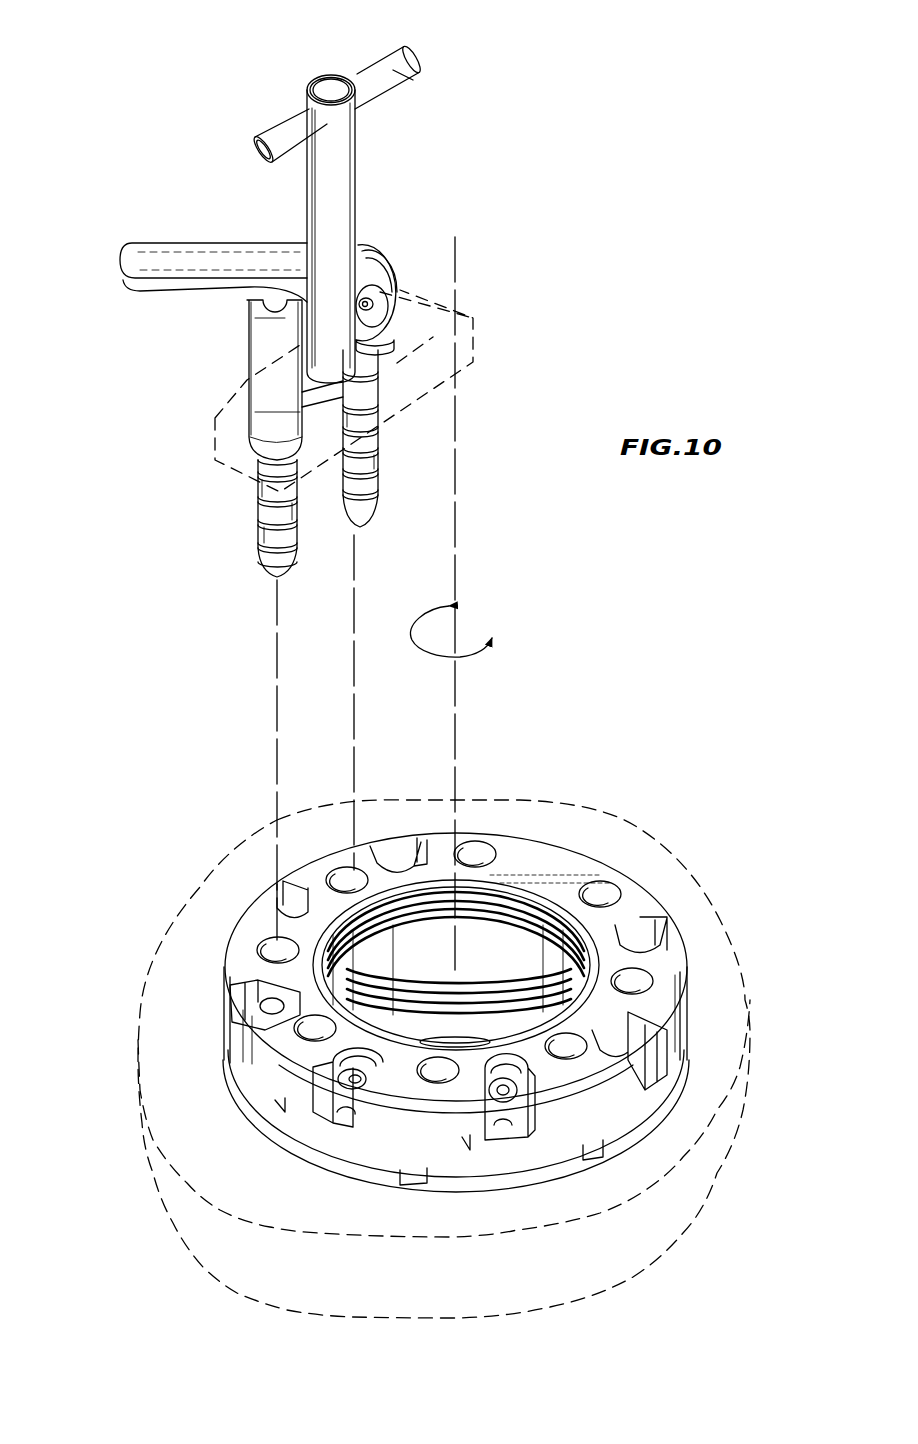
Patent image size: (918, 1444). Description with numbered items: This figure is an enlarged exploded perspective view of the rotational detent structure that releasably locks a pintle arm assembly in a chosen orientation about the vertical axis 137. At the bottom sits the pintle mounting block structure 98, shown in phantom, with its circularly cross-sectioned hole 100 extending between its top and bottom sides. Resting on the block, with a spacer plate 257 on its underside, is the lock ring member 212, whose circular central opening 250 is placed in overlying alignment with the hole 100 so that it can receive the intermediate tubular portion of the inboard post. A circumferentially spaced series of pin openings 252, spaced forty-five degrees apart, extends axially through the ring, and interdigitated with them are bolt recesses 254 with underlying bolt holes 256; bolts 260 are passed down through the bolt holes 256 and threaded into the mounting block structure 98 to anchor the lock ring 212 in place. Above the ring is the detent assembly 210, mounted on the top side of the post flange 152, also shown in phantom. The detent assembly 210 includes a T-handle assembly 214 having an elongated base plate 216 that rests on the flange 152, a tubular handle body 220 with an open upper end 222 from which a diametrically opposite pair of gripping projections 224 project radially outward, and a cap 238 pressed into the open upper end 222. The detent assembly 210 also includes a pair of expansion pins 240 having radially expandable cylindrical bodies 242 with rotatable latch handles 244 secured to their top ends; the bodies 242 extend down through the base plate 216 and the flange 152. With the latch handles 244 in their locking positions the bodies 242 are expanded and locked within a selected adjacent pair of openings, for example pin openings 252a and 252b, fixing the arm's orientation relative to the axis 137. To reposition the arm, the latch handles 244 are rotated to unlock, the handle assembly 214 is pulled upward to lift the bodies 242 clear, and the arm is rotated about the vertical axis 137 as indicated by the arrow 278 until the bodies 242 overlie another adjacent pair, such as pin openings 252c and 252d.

The pintle mounting block structure 98 is at (753, 1110).
The hole 100 is at (517, 960).
The vertical axis 137 is at (455, 617).
The flange 152 is at (215, 452).
The detent assembly 210 is at (378, 196).
The lock ring member 212 is at (690, 988).
The T-handle assembly 214 is at (360, 155).
The base plate 216 is at (383, 350).
The handle body 220 is at (307, 202).
The open upper end 222 is at (312, 95).
The gripping projections 224 is at (400, 70).
The cap 238 is at (333, 82).
The expansion pins 240 is at (387, 247).
The cylindrical bodies 242 is at (370, 480).
The latch handles 244 is at (212, 262).
The central opening 250 is at (580, 867).
The pin openings 252 is at (307, 1027).
The pin opening 252a is at (273, 947).
The pin opening 252b is at (340, 872).
The pin opening 252c is at (480, 852).
The pin opening 252d is at (600, 890).
The bolt recesses 254 is at (660, 923).
The bolt holes 256 is at (353, 1117).
The spacer plate 257 is at (630, 1143).
The bolts 260 is at (247, 983).
The arrow 278 is at (467, 653).